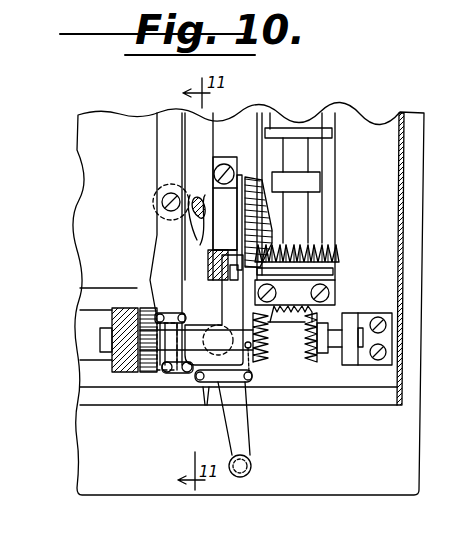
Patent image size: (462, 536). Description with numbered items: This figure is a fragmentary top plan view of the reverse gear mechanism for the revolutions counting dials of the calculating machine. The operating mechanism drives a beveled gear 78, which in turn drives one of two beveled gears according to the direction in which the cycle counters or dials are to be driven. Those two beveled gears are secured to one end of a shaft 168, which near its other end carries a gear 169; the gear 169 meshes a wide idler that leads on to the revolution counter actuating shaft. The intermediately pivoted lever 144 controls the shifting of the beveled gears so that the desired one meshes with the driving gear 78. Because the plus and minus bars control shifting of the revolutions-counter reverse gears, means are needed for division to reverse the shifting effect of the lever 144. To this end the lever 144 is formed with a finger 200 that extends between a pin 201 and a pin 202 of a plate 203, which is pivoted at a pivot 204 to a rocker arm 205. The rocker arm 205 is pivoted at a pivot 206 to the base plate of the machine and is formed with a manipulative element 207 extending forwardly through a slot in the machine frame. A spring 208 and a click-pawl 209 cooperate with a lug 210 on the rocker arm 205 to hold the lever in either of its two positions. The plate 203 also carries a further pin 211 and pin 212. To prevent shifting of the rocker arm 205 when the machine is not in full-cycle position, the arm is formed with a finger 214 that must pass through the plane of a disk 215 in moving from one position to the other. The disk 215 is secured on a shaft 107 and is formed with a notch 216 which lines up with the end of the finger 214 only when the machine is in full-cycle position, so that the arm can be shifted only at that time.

The beveled gear 78 is at (295, 292).
The shaft 107 is at (201, 198).
The intermediately pivoted lever 144 is at (157, 136).
The shaft 168 is at (100, 340).
The gear 169 is at (140, 322).
The finger 200 is at (158, 312).
The pin 201 is at (150, 310).
The pin 202 is at (180, 314).
The plate 203 is at (165, 372).
The pivot 204 is at (160, 355).
The rocker arm 205 is at (208, 412).
The pivot 206 is at (214, 326).
The manipulative element 207 is at (252, 466).
The spring 208 is at (265, 355).
The click-pawl 209 is at (250, 385).
The lug 210 is at (255, 377).
The pin 211 is at (170, 370).
The pin 212 is at (186, 372).
The finger 214 is at (196, 310).
The disk 215 is at (241, 185).
The notch 216 is at (226, 238).